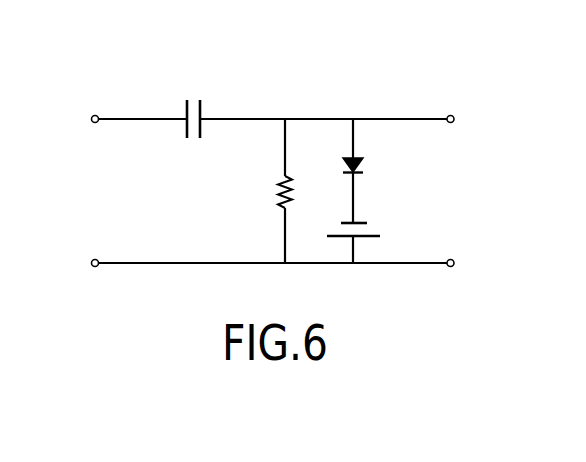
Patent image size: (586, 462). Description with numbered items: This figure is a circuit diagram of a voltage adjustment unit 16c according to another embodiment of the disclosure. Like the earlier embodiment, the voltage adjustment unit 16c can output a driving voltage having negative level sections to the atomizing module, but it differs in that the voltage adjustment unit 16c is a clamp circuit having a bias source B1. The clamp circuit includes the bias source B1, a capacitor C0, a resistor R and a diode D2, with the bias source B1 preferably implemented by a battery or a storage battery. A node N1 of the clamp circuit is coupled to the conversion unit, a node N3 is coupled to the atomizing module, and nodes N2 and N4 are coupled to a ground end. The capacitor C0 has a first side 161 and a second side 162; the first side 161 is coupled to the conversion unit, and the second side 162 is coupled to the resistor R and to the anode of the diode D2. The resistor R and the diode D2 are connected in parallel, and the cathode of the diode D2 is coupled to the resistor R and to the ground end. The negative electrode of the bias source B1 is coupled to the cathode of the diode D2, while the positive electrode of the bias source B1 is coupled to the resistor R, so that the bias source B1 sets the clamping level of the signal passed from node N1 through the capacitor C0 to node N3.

The voltage adjustment unit 16c is at (494, 33).
The first side 161 is at (130, 117).
The second side 162 is at (243, 117).
The capacitor C0 is at (195, 102).
The resistor R is at (297, 191).
The diode D2 is at (373, 171).
The bias source B1 is at (371, 239).
The node N1 is at (75, 119).
The node N2 is at (75, 264).
The node N3 is at (472, 120).
The node N4 is at (472, 264).